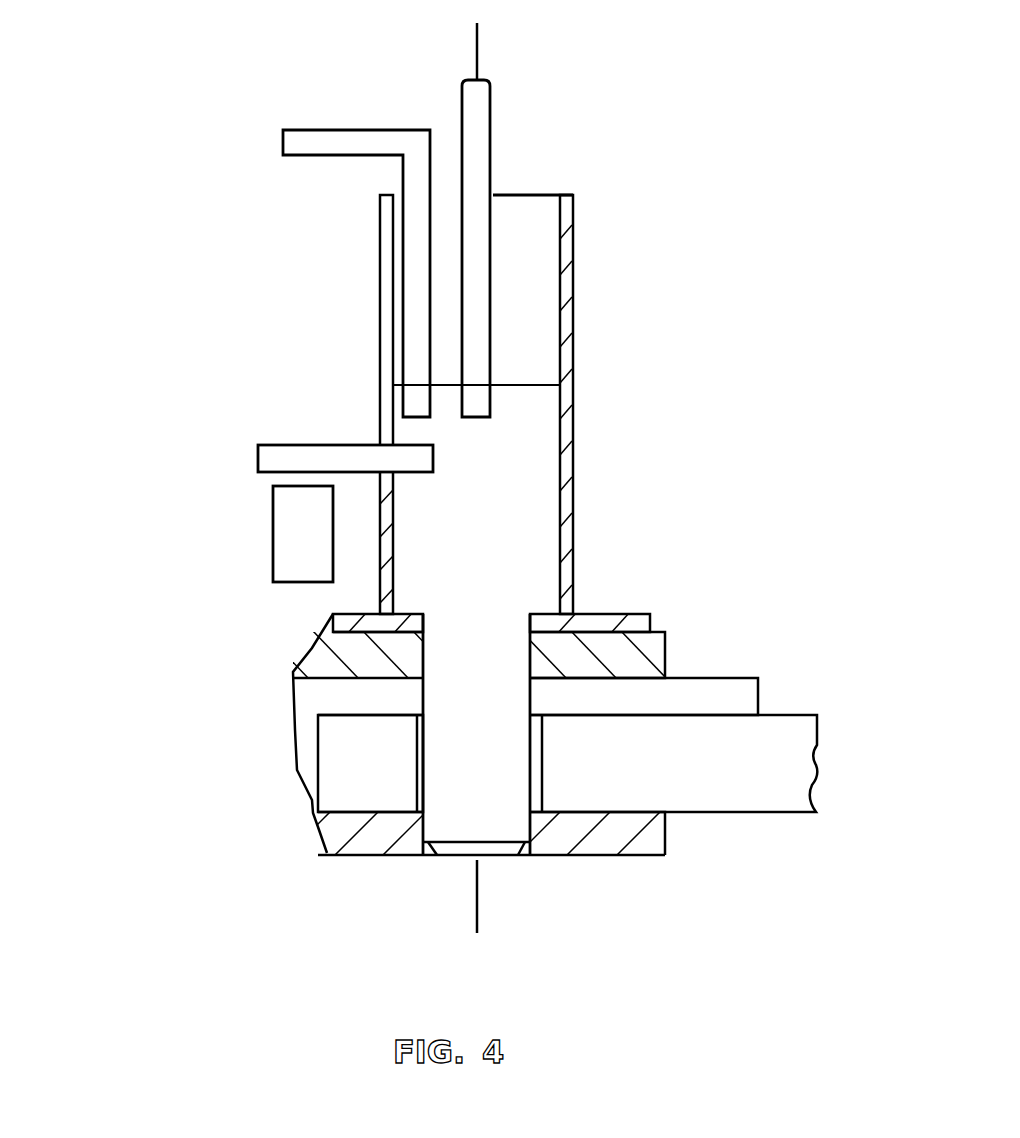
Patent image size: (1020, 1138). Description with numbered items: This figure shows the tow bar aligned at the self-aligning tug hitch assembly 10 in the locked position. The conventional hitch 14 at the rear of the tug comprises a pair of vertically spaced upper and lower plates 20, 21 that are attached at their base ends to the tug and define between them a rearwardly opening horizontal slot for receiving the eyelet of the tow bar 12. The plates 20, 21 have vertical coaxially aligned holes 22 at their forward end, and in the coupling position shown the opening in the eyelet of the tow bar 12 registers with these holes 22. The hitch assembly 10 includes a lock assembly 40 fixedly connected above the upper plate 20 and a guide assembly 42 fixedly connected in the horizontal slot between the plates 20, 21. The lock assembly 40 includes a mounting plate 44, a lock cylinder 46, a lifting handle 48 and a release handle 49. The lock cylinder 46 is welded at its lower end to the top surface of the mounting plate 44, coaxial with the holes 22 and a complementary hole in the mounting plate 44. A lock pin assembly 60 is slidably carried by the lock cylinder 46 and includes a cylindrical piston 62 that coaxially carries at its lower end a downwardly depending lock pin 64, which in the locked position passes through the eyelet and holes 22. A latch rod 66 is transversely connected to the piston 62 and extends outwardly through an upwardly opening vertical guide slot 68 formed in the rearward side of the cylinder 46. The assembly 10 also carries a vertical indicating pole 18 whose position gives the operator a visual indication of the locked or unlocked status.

The tug hitch assembly 10 is at (118, 292).
The tow bar 12 is at (777, 737).
The hitch 14 is at (332, 622).
The indicating pole 18 is at (592, 209).
The upper plate 20 is at (310, 667).
The lower plate 21 is at (333, 828).
The holes 22 is at (417, 775).
The lock assembly 40 is at (635, 152).
The guide assembly 42 is at (728, 673).
The mounting plate 44 is at (639, 585).
The lock cylinder 46 is at (569, 278).
The lifting handle 48 is at (285, 538).
The release handle 49 is at (322, 223).
The lock pin assembly 60 is at (585, 354).
The piston 62 is at (545, 451).
The lock pin 64 is at (522, 887).
The latch rod 66 is at (267, 460).
The guide slot 68 is at (387, 292).